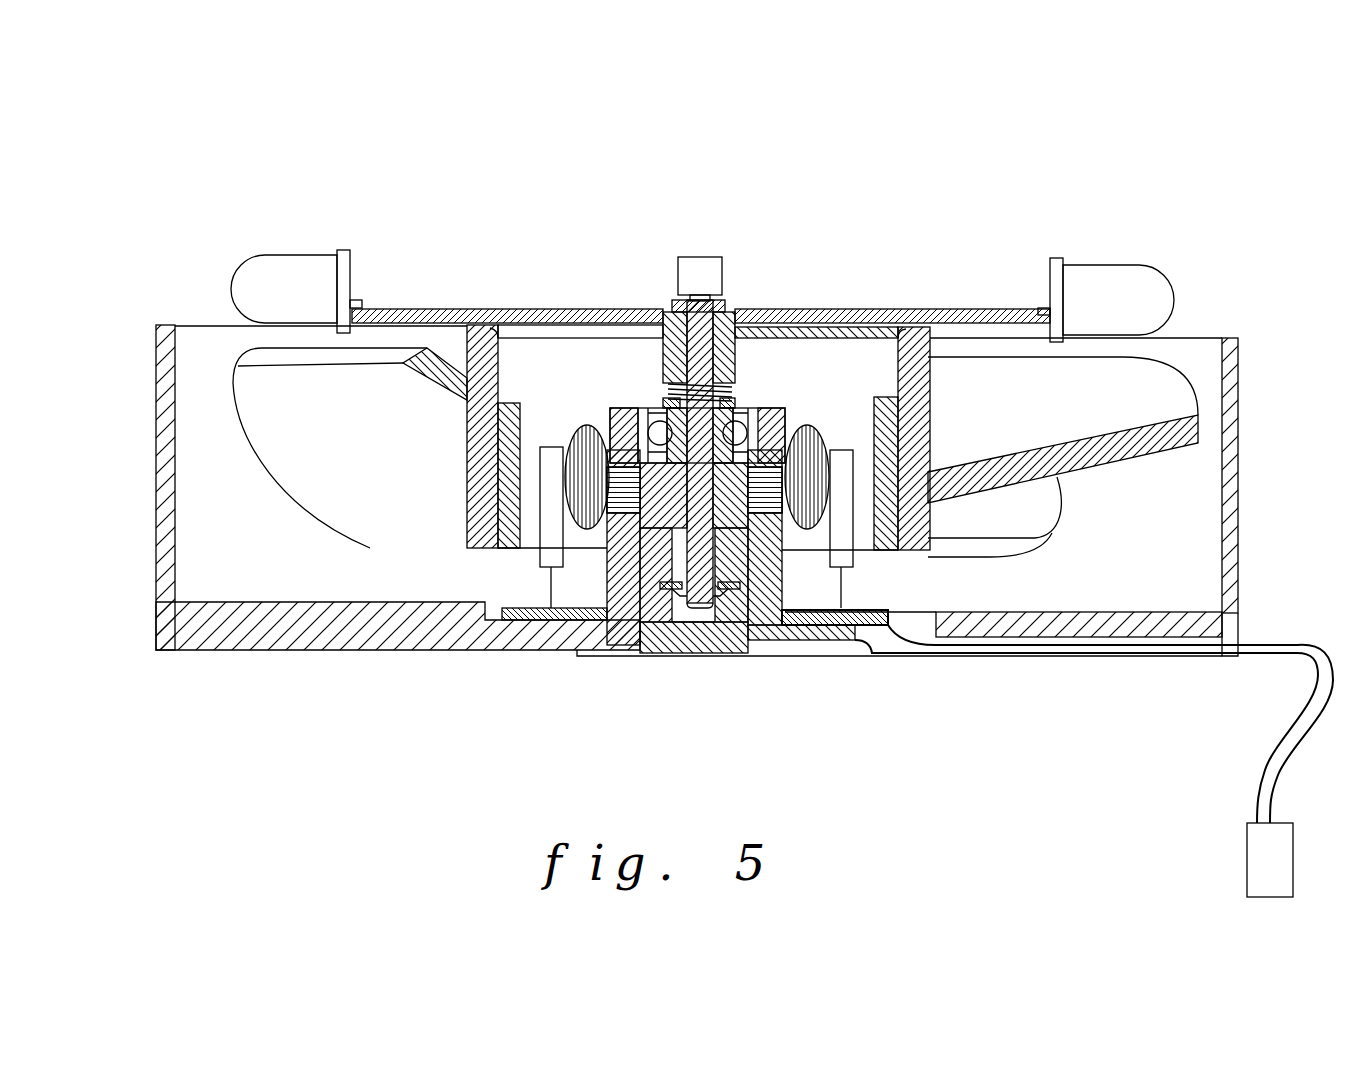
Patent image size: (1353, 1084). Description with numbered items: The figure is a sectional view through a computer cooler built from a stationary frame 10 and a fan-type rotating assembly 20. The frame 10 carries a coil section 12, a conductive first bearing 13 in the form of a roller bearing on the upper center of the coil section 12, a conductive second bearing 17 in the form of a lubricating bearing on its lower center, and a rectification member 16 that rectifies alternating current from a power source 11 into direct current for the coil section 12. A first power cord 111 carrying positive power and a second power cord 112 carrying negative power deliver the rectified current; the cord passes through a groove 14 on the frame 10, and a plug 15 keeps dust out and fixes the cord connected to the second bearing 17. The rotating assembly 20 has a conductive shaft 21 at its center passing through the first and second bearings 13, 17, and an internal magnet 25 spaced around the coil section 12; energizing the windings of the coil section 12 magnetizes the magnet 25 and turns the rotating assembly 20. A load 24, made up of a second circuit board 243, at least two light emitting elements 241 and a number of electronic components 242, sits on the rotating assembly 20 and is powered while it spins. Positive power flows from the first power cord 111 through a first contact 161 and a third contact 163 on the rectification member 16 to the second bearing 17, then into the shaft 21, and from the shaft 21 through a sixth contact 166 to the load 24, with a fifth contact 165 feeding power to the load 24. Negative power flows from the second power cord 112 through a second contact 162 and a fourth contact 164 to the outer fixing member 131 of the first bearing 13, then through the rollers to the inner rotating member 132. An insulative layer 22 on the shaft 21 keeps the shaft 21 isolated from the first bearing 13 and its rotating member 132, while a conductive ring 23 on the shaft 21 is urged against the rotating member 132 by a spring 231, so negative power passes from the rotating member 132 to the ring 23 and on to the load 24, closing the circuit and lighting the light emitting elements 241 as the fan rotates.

The frame 10 is at (312, 654).
The power source 11 is at (1258, 855).
The first power cord 111 is at (1265, 755).
The second power cord 112 is at (593, 310).
The coil section 12 is at (572, 545).
The first bearing 13 is at (607, 440).
The fixing member 131 is at (612, 470).
The rotating member 132 is at (565, 472).
The groove 14 is at (913, 656).
The plug 15 is at (670, 650).
The rectification member 16 is at (812, 620).
The first contact 161 is at (872, 630).
The second contact 162 is at (870, 633).
The third contact 163 is at (747, 565).
The fourth contact 164 is at (737, 400).
The fifth contact 165 is at (652, 307).
The sixth contact 166 is at (742, 418).
The second bearing 17 is at (653, 562).
The rotating assembly 20 is at (934, 409).
The conductive shaft 21 is at (520, 520).
The insulative layer 22 is at (640, 420).
The conductive ring 23 is at (510, 318).
The spring 231 is at (730, 382).
The load 24 is at (543, 186).
The light emitting elements 241 is at (230, 285).
The electronic components 242 is at (715, 258).
The second circuit board 243 is at (625, 310).
The magnet 25 is at (510, 550).